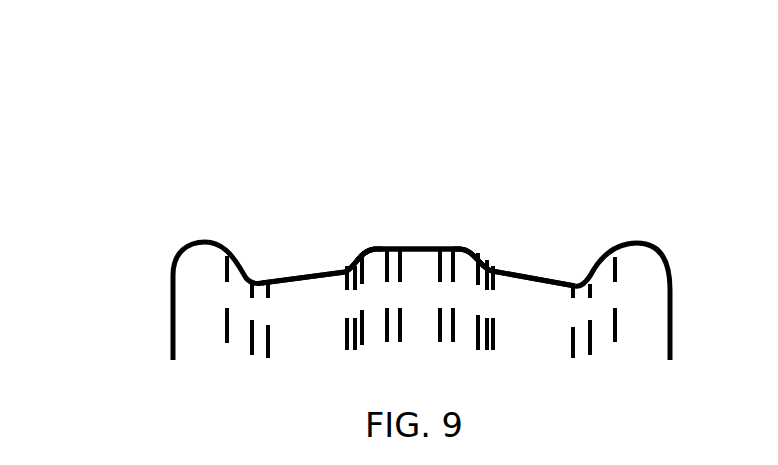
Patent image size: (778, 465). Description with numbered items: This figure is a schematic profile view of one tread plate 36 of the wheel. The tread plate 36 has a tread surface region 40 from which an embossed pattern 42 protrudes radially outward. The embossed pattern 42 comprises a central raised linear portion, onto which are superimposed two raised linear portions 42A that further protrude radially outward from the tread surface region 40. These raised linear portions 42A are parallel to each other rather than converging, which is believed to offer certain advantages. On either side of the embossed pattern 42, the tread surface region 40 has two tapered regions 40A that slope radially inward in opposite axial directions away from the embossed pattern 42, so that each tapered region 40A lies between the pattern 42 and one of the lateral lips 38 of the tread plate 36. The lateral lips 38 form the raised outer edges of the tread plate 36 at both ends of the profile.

The tread plate 36 is at (106, 155).
The lateral lips 38 is at (200, 259).
The tread surface region 40 is at (577, 246).
The tapered regions 40A is at (293, 278).
The embossed pattern 42 is at (356, 216).
The raised linear portions 42A is at (465, 262).